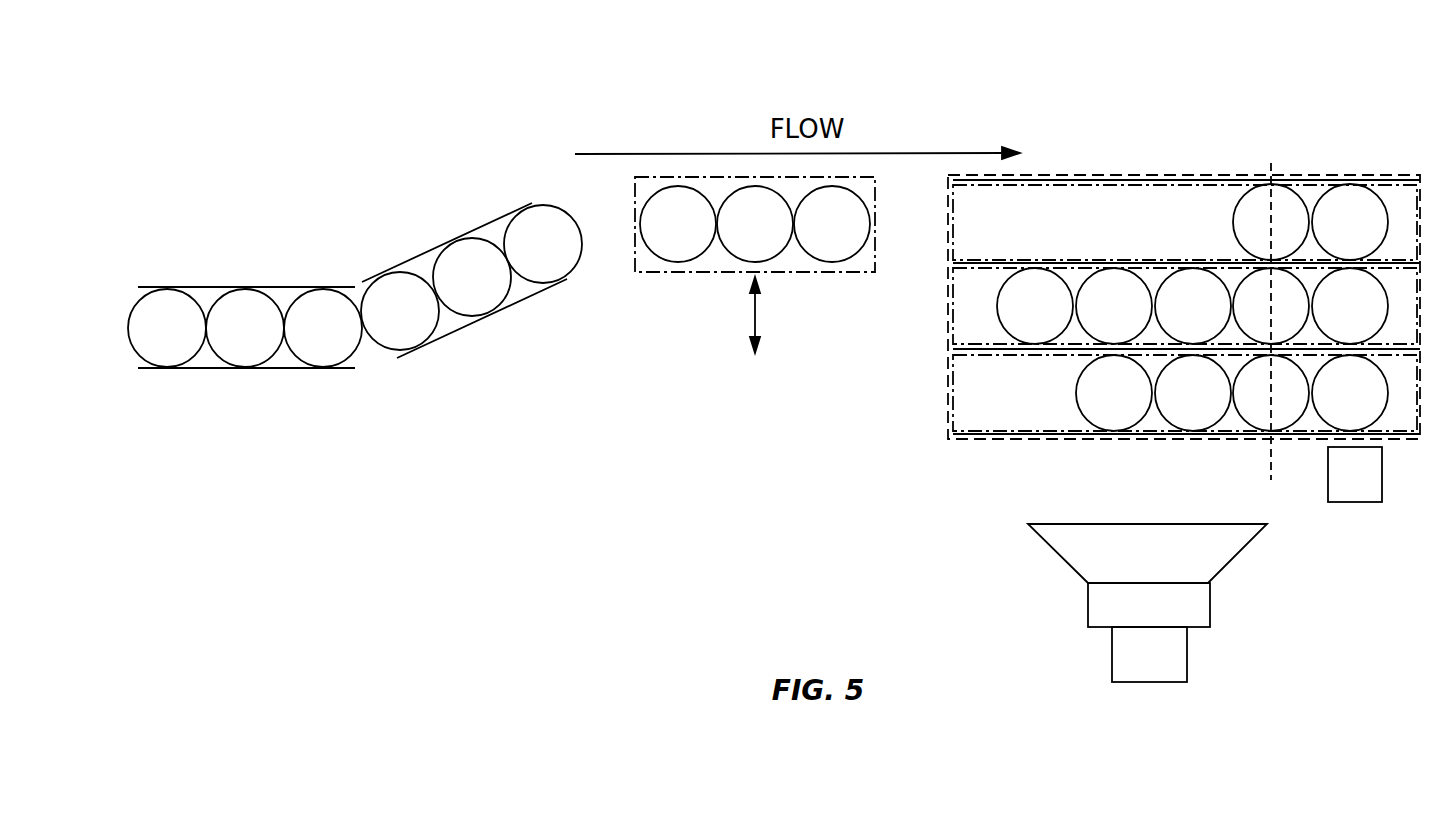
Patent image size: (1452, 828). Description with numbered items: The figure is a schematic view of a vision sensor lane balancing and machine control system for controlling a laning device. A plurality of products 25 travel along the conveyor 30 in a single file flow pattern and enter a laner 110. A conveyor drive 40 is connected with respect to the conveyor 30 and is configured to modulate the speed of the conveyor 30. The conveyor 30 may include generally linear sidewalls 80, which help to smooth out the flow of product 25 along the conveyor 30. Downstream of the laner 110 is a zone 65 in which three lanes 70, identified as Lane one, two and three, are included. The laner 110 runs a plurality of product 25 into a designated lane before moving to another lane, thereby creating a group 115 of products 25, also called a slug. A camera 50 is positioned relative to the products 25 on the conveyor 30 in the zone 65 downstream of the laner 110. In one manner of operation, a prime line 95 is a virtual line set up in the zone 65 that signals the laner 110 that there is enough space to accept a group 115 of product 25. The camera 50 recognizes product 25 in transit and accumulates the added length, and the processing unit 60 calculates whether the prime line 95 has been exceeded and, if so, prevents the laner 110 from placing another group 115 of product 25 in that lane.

The product 25 is at (163, 328).
The laner 110 is at (462, 216).
The group of products 115 is at (698, 282).
The conveyor 30 is at (1128, 315).
The zone 65 is at (935, 308).
The lanes 70 is at (977, 360).
The linear sidewalls 80 is at (1042, 445).
The prime line 95 is at (1271, 146).
The conveyor drive 40 is at (1355, 512).
The camera 50 is at (1231, 603).
The processing unit 60 is at (1209, 658).